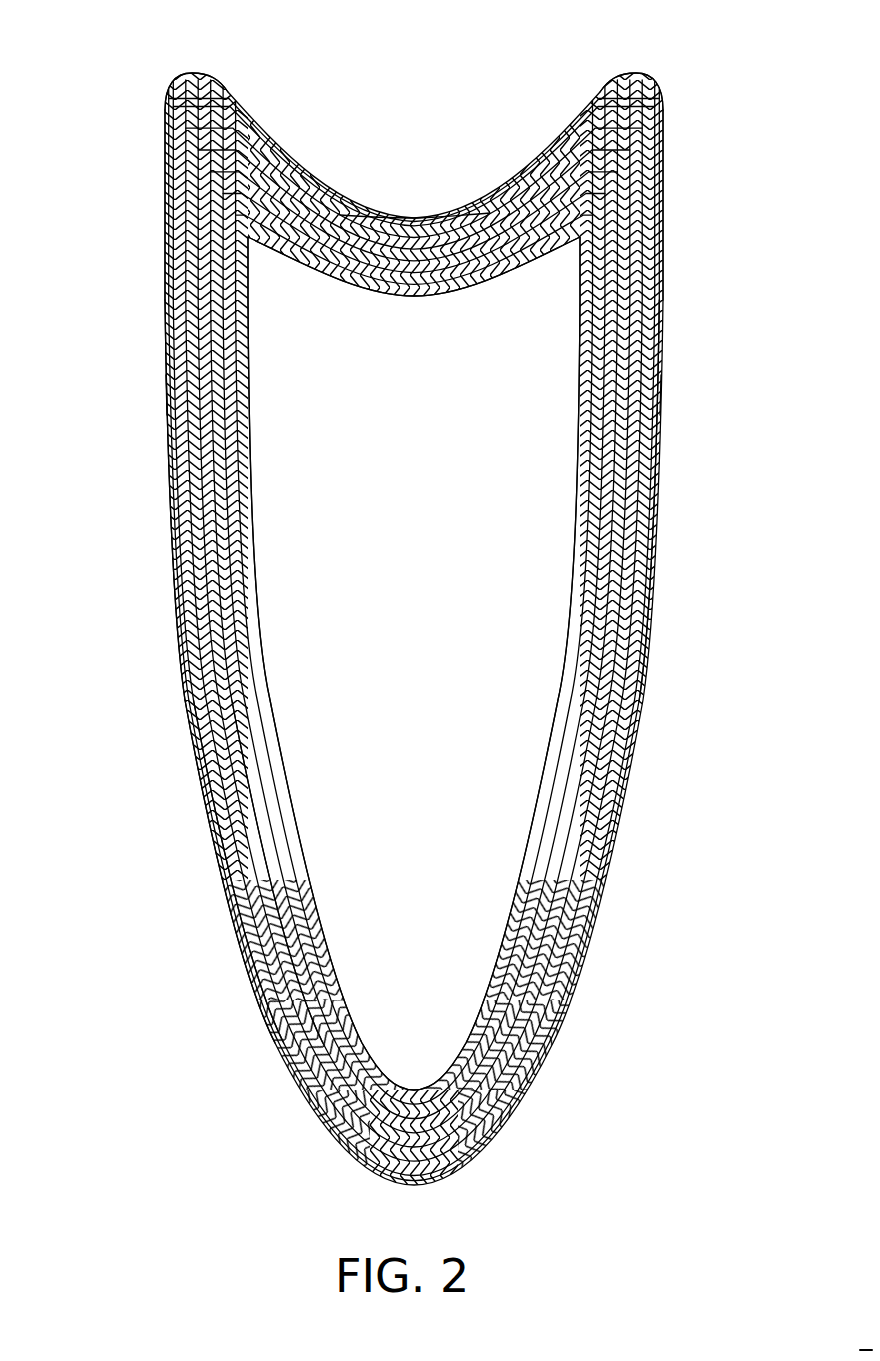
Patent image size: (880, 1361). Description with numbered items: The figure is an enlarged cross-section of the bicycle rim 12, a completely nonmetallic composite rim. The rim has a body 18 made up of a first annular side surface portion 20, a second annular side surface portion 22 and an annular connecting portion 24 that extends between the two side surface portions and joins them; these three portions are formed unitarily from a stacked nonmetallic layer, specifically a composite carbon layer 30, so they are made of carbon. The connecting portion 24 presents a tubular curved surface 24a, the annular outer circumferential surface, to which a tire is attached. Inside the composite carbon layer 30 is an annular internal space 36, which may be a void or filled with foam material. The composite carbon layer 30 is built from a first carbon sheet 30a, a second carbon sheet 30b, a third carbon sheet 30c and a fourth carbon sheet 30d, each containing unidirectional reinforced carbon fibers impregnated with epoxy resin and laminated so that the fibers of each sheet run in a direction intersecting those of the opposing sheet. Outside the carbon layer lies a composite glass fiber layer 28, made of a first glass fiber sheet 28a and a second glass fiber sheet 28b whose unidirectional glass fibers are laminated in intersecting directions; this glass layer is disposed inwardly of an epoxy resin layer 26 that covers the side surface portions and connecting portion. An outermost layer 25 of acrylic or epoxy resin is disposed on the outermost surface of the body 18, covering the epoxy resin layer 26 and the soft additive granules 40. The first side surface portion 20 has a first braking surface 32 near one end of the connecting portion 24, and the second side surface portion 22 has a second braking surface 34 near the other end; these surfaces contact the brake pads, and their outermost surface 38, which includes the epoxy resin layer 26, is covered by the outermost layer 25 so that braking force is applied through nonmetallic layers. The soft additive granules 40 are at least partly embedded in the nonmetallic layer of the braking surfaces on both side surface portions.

The bicycle rim 12 is at (672, 43).
The body 18 is at (725, 505).
The first annular side surface portion 20 is at (270, 685).
The second annular side surface portion 22 is at (662, 565).
The annular connecting portion 24 is at (420, 300).
The curved surface 24a is at (421, 216).
The outermost layer 25 is at (190, 725).
The epoxy resin layer 26 is at (205, 789).
The composite glass fiber layer 28 is at (140, 822).
The first glass fiber sheet 28a is at (223, 830).
The second glass fiber sheet 28b is at (245, 852).
The composite carbon layer 30 is at (140, 892).
The first carbon sheet 30a is at (267, 898).
The second carbon sheet 30b is at (287, 917).
The third carbon sheet 30c is at (305, 943).
The fourth carbon sheet 30d is at (332, 980).
The first braking surface 32 is at (128, 92).
The second braking surface 34 is at (702, 92).
The internal space 36 is at (426, 456).
The outermost surface 38 is at (167, 122).
The soft additive granules 40 is at (176, 380).